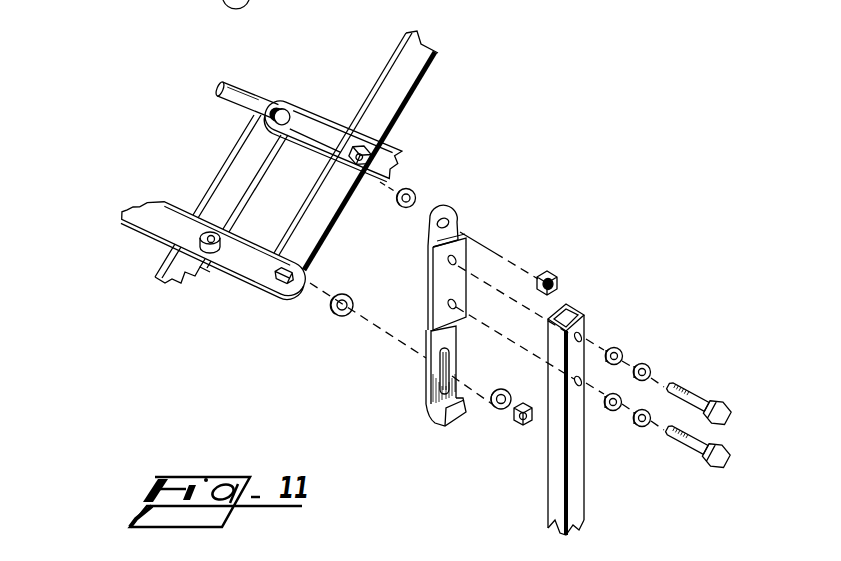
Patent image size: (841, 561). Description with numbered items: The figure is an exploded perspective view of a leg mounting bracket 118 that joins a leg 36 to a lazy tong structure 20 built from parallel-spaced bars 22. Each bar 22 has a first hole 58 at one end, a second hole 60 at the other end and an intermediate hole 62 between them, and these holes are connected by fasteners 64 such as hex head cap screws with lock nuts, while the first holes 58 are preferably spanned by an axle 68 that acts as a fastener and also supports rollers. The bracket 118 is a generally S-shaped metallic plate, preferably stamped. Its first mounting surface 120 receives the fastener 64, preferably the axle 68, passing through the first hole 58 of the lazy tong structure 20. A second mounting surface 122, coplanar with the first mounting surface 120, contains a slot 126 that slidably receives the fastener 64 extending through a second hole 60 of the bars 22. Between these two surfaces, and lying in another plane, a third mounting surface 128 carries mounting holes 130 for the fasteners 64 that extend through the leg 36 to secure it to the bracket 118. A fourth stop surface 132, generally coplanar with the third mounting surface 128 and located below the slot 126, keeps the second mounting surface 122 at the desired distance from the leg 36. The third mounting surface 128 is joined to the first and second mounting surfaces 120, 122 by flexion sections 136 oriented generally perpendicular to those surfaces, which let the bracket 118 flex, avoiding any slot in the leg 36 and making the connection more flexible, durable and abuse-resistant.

The lazy tong structure 20 is at (322, 245).
The bars 22 is at (340, 214).
The leg 36 is at (590, 470).
The first hole 58 is at (292, 102).
The second hole 60 is at (281, 285).
The intermediate hole 62 is at (220, 252).
The fastener 64 is at (733, 423).
The axle 68 is at (287, 100).
The leg mounting bracket 118 is at (466, 342).
The first mounting surface 120 is at (430, 298).
The second mounting surface 122 is at (452, 210).
The slot 126 is at (443, 392).
The third mounting surface 128 is at (458, 259).
The mounting holes 130 is at (458, 260).
The fourth stop surface 132 is at (450, 430).
The flexion sections 136 is at (416, 207).